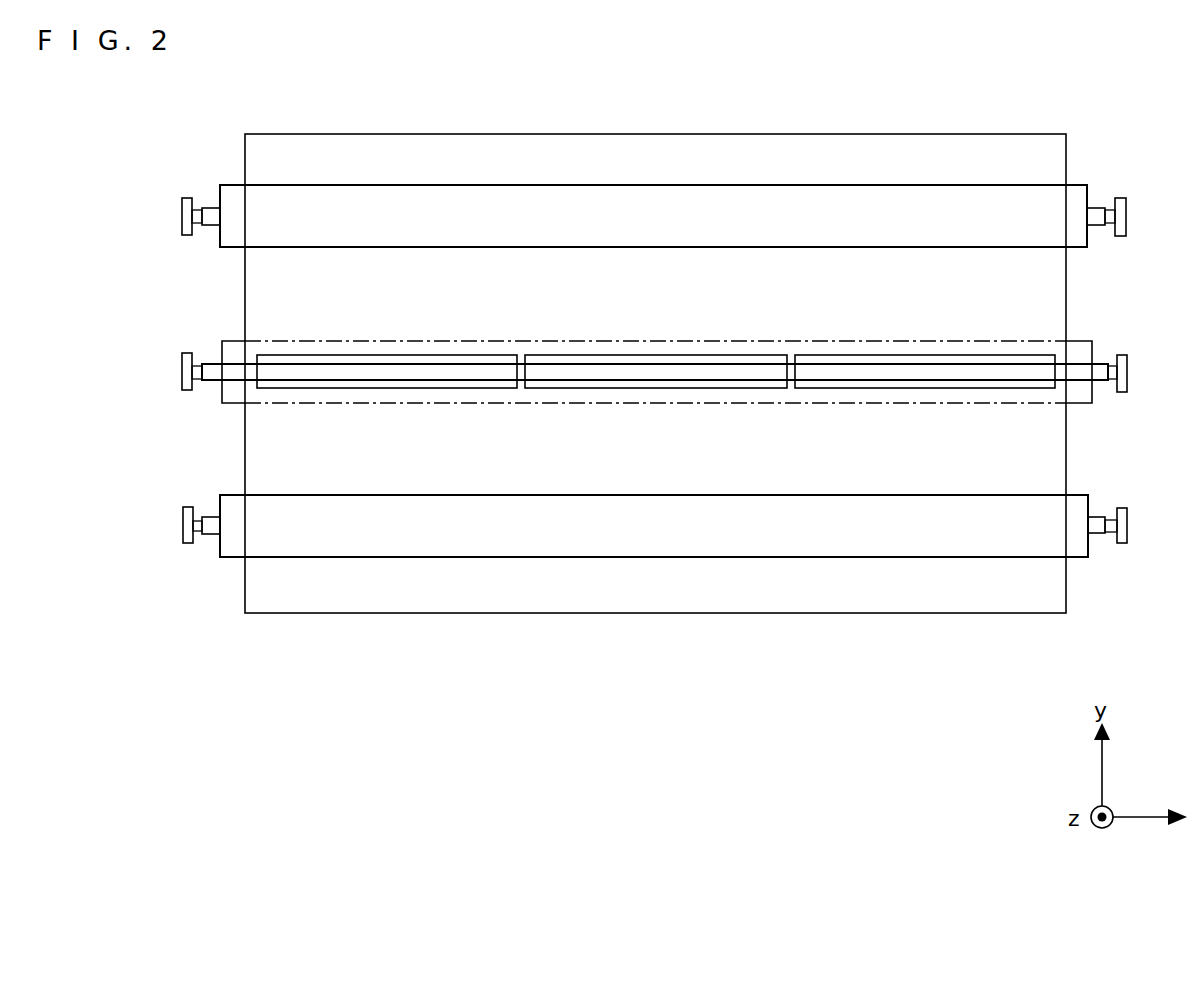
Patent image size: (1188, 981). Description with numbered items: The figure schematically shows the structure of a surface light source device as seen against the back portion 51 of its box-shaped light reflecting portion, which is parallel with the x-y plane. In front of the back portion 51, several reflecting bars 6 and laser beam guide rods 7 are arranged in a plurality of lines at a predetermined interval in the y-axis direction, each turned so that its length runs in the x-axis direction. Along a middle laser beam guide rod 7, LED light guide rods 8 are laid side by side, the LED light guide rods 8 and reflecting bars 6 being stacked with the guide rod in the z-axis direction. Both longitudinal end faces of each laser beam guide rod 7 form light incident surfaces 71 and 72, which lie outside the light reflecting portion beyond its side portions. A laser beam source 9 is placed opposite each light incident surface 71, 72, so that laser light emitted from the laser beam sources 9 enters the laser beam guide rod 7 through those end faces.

The back portion 51 is at (902, 152).
The reflecting bar 6 is at (1065, 238).
The laser beam guide rod 7 is at (211, 207).
The light incident surface 71 is at (1109, 366).
The light incident surface 72 is at (203, 366).
The LED light guide rod 8 is at (337, 355).
The laser beam source 9 is at (182, 213).